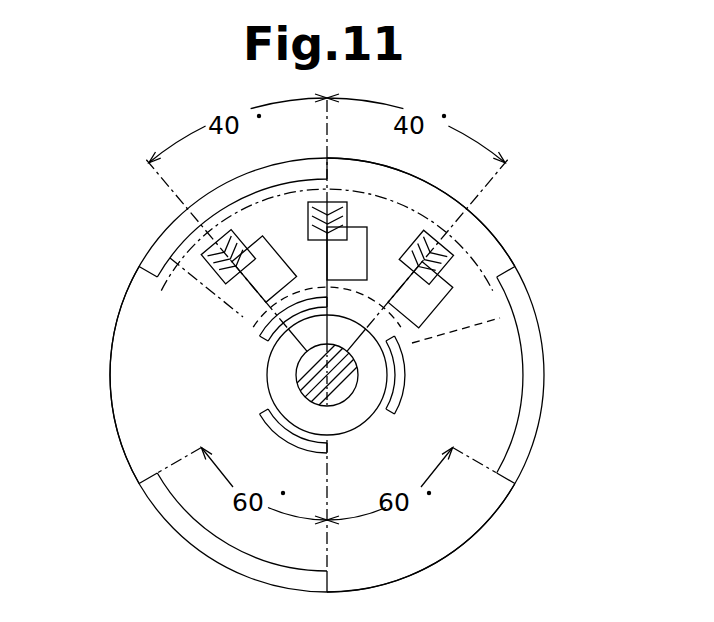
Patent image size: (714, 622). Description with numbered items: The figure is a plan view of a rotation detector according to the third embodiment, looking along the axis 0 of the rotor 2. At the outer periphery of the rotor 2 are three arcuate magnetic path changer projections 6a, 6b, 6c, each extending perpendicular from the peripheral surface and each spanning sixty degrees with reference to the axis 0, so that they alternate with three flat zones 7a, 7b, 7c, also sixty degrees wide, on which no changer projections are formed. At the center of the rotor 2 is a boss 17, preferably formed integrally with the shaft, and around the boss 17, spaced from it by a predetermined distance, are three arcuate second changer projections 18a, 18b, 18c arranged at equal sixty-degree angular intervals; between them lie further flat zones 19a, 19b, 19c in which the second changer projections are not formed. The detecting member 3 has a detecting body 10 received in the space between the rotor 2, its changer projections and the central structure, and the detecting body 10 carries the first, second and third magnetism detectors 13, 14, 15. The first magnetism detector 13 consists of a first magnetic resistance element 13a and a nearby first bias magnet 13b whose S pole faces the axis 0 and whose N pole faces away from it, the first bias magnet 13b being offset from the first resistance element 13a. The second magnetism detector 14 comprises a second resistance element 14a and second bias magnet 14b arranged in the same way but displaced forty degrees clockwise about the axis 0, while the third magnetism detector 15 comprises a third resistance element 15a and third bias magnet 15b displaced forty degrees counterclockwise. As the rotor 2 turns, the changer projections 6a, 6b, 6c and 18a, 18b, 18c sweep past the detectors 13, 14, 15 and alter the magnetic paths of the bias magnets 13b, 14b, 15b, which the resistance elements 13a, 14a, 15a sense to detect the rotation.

The rotor 2 is at (543, 407).
The detecting member 3 is at (330, 292).
The detecting body 10 is at (458, 336).
The magnetic path changer projection 6a is at (268, 183).
The magnetic path changer projection 6b is at (535, 332).
The magnetic path changer projection 6c is at (197, 540).
The flat zone 7a is at (455, 182).
The flat zone 7b is at (457, 540).
The flat zone 7c is at (113, 306).
The first magnetism detector 13 is at (372, 193).
The first magnetic resistance element 13a is at (337, 201).
The first bias magnet 13b is at (358, 226).
The second magnetism detector 14 is at (496, 264).
The second resistance element 14a is at (447, 233).
The second bias magnet 14b is at (460, 262).
The third magnetism detector 15 is at (215, 300).
The third resistance element 15a is at (220, 289).
The third bias magnet 15b is at (252, 305).
The boss 17 is at (333, 424).
The second changer projection 18a is at (313, 298).
The second changer projection 18b is at (398, 407).
The second changer projection 18c is at (267, 426).
The gap 19a is at (360, 305).
The gap 19b is at (371, 437).
The gap 19c is at (258, 380).
The axis 0 is at (327, 375).